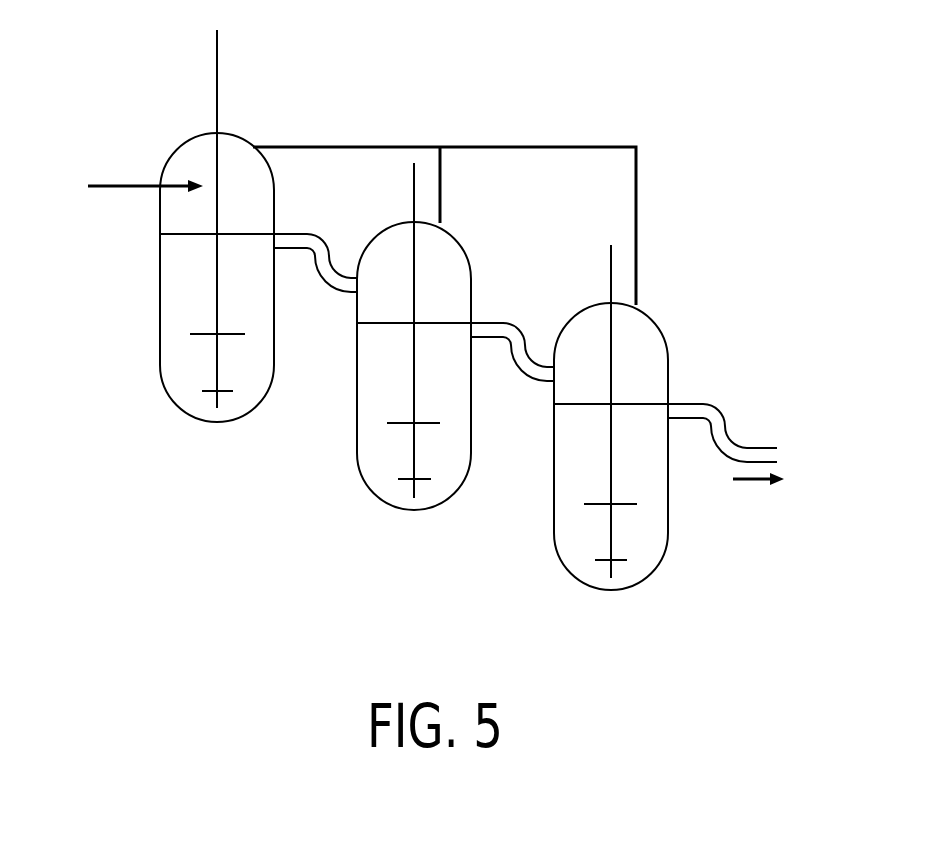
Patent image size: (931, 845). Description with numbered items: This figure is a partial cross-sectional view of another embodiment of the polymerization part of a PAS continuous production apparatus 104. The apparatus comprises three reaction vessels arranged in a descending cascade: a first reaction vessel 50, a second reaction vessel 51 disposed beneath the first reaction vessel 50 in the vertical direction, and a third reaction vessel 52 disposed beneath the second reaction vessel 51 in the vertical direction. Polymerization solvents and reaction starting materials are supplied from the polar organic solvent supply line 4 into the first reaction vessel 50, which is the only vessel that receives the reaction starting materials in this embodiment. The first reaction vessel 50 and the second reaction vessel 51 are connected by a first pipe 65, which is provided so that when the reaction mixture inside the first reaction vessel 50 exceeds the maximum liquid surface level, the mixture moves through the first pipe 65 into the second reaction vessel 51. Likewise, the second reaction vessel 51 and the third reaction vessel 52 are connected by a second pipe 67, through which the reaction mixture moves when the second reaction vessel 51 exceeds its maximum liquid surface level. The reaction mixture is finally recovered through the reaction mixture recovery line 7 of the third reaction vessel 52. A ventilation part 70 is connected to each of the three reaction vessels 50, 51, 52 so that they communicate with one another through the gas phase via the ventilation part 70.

The continuous production apparatus 104 is at (690, 62).
The polar organic solvent supply line 4 is at (120, 190).
The first reaction vessel 50 is at (176, 150).
The second reaction vessel 51 is at (373, 237).
The third reaction vessel 52 is at (572, 318).
The first pipe 65 is at (331, 282).
The second pipe 67 is at (526, 372).
The ventilation part 70 is at (330, 144).
The reaction mixture recovery line 7 is at (752, 488).